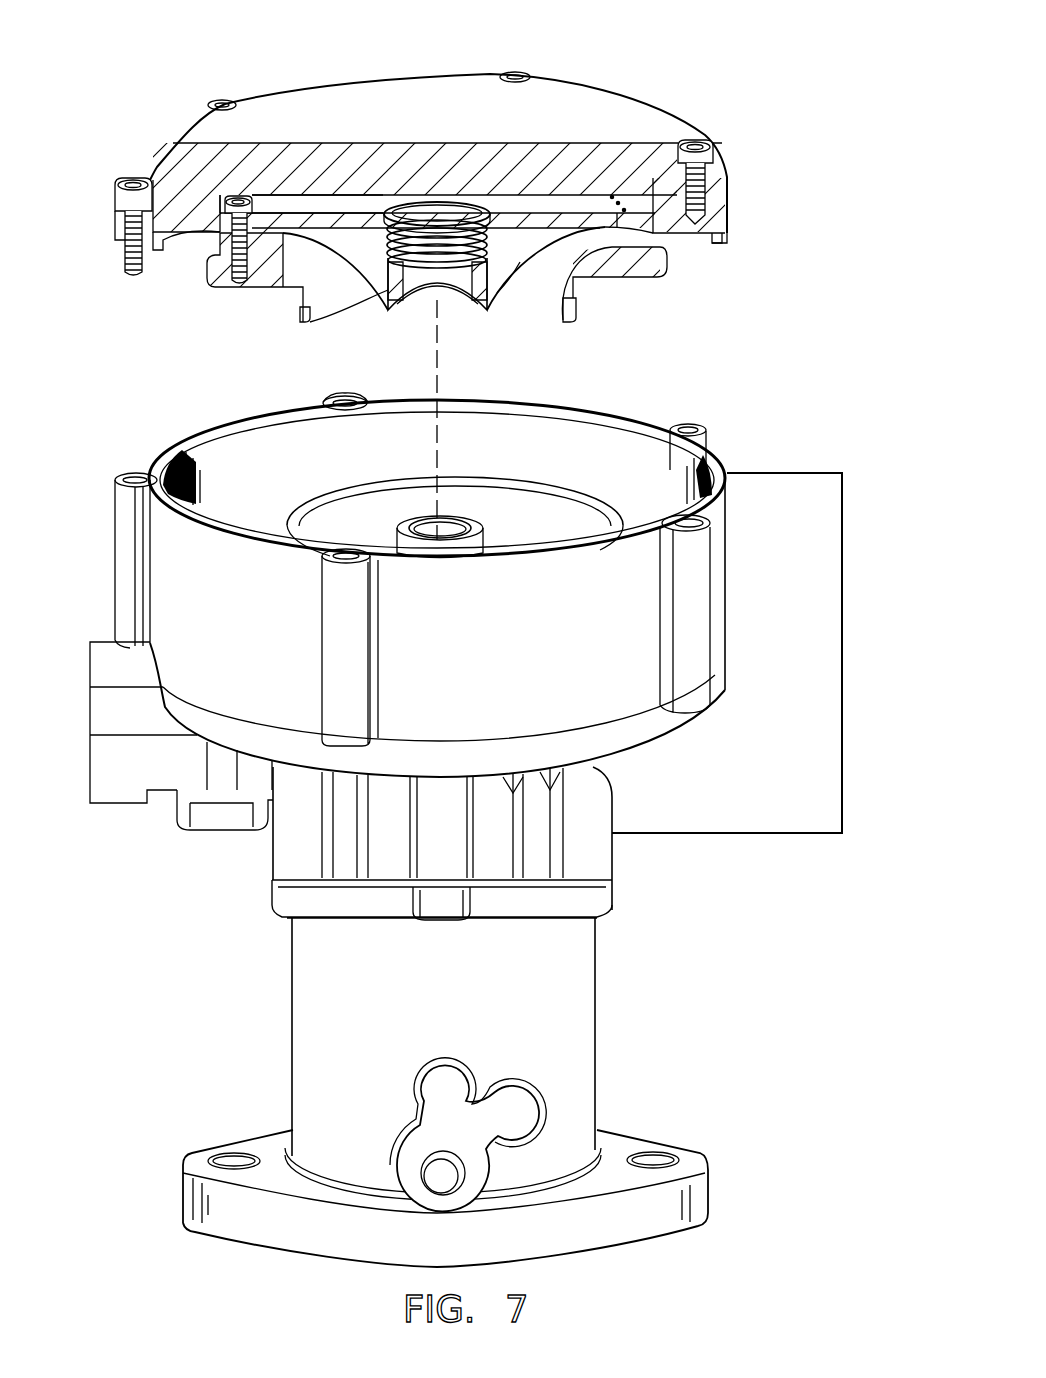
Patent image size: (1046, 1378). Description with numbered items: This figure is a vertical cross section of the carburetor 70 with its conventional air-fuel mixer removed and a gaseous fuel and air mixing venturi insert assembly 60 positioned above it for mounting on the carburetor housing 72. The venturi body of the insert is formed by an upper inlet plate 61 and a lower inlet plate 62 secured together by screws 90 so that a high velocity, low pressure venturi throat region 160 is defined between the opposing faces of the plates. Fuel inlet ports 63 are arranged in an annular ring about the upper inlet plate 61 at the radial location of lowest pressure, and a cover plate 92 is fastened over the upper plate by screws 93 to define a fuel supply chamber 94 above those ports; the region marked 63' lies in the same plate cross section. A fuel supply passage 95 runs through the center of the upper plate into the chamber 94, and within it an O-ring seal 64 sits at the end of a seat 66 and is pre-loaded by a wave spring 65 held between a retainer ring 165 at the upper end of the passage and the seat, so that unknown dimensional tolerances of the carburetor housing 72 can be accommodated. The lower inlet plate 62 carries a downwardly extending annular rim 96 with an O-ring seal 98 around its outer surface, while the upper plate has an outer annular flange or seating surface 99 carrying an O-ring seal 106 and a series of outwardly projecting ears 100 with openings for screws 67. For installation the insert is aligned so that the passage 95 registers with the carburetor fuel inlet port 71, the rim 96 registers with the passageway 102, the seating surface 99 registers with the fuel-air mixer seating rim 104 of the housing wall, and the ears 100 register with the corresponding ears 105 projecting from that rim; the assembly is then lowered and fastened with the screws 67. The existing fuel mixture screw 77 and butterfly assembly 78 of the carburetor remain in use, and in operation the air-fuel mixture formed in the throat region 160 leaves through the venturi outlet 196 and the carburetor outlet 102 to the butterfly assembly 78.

The venturi insert assembly 60 is at (647, 66).
The cover plate 92 is at (295, 100).
The cap wall step 63' is at (261, 173).
The fuel supply chamber 94 is at (367, 205).
The retainer ring 165 is at (493, 222).
The screws 93 is at (703, 156).
The screws 67 is at (118, 200).
The ears 100 is at (112, 235).
The seating surface 99 is at (148, 243).
The screws 90 is at (232, 234).
The venturi throat region 160 is at (272, 293).
The O-ring seal 98 is at (300, 308).
The annular rim 96 is at (320, 290).
The wave spring 65 is at (382, 238).
The seat 66 is at (388, 290).
The O-ring seal 64 is at (425, 290).
The fuel supply passage 95 is at (455, 290).
The upper inlet plate 61 is at (557, 257).
The venturi outlet 196 is at (546, 303).
The lower inlet plate 62 is at (590, 255).
The fuel inlet ports 63 is at (660, 245).
The O-ring seal 106 is at (728, 240).
The ears 105 is at (688, 425).
The fuel-air mixer seating rim 104 is at (690, 470).
The fuel inlet port 71 is at (470, 518).
The passageway 102 is at (540, 517).
The fuel mixture screw 77 is at (197, 835).
The carburetor 70 is at (232, 875).
The butterfly assembly 78 is at (283, 1012).
The carburetor housing 72 is at (700, 838).